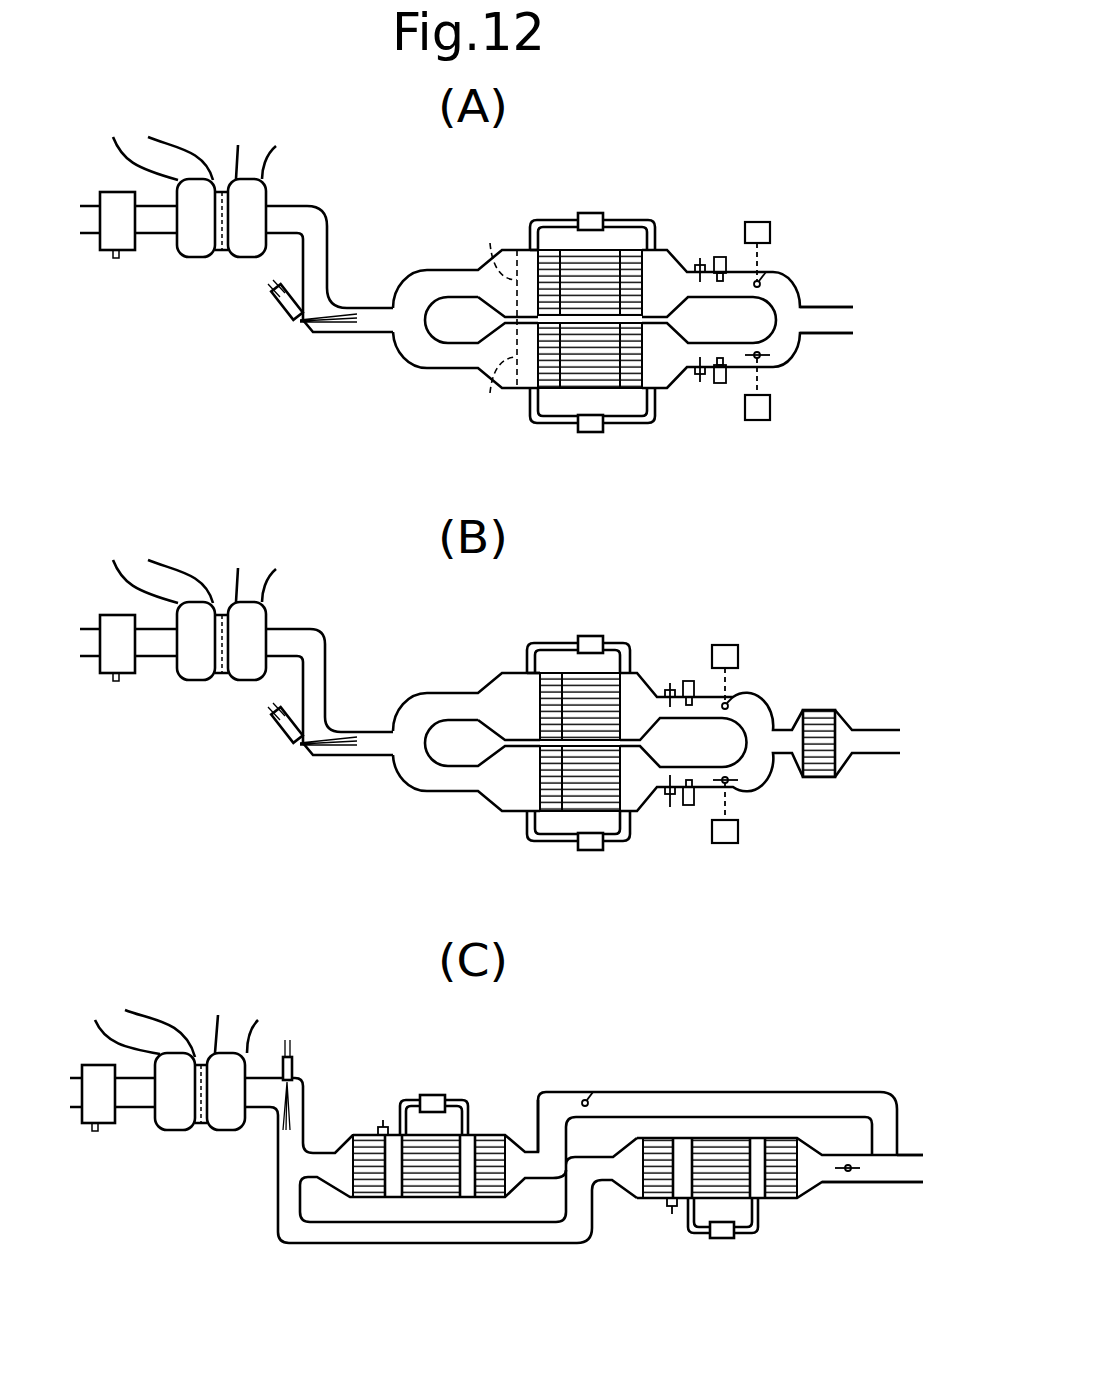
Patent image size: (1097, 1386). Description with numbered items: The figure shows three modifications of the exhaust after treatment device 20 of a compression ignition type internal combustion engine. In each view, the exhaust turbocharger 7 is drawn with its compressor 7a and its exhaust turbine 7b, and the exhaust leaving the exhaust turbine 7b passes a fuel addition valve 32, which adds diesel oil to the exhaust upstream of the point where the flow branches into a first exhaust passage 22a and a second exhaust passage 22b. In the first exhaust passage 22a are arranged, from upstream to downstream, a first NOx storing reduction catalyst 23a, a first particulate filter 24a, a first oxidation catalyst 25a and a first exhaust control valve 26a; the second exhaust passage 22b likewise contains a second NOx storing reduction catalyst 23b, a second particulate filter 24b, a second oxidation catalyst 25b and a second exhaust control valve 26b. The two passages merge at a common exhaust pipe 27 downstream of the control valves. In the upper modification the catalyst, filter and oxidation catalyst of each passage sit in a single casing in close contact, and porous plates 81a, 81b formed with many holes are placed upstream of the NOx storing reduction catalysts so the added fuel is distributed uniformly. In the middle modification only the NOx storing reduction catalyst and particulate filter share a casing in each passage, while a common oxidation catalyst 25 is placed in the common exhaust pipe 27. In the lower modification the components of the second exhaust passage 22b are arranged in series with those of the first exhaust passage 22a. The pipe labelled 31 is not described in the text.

The exhaust turbocharger 7 is at (218, 258).
The compressor 7a is at (190, 252).
The exhaust turbine 7b is at (247, 252).
The exhaust pipe 31 is at (310, 237).
The fuel addition valve 32 is at (287, 310).
The first exhaust passage 22a is at (427, 283).
The second exhaust passage 22b is at (427, 357).
The porous plate 81a is at (490, 243).
The porous plate 81b is at (490, 393).
The first NOx storing reduction catalyst 23a is at (550, 260).
The second NOx storing reduction catalyst 23b is at (550, 380).
The first particulate filter 24a is at (600, 263).
The second particulate filter 24b is at (600, 380).
The first oxidation catalyst 25a is at (630, 260).
The second oxidation catalyst 25b is at (630, 380).
The common oxidation catalyst 25 is at (820, 723).
The first exhaust control valve 26a is at (777, 277).
The second exhaust control valve 26b is at (767, 363).
The common exhaust pipe 27 is at (828, 317).
The exhaust after treatment device 20 is at (528, 1097).